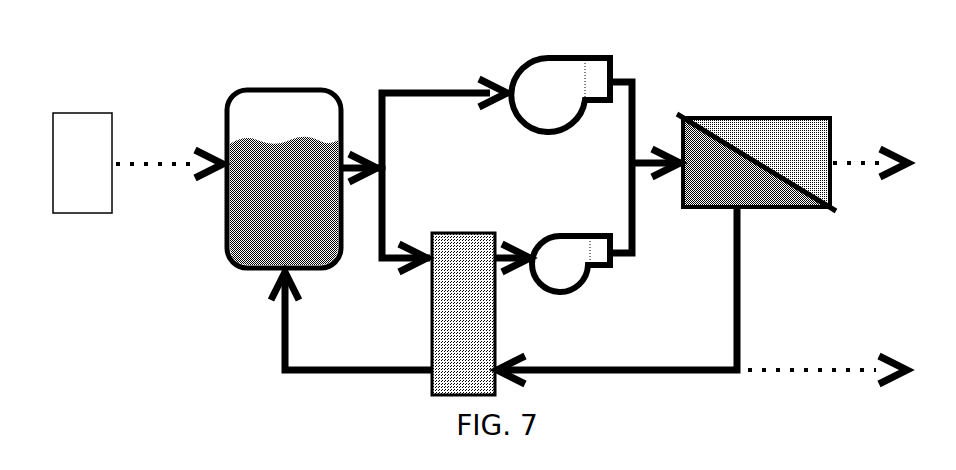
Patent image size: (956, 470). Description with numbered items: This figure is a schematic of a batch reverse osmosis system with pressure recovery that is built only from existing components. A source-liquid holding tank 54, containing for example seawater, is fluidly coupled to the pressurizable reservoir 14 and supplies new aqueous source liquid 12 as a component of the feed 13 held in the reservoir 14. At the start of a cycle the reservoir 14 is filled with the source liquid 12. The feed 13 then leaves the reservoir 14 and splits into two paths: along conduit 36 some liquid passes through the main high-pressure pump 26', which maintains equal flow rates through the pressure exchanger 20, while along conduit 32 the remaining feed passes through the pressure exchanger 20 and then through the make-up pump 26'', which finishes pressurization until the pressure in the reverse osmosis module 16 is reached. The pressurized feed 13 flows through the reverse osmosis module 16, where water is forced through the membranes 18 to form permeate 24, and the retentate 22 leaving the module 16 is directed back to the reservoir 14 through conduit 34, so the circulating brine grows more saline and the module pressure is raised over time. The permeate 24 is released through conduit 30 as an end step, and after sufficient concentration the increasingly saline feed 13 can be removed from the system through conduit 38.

The source-liquid holding tank 54 is at (69, 176).
The aqueous source liquid 12 is at (185, 164).
The reservoir 14 is at (268, 90).
The feed 13 is at (265, 215).
The conduit 36 is at (386, 122).
The conduit 32 is at (386, 212).
The pressure exchanger 20 is at (451, 327).
The main high-pressure pump 26' is at (559, 72).
The make-up pump 26'' is at (564, 239).
The reverse osmosis module 16 is at (737, 134).
The membranes 18 is at (727, 128).
The retentate 22 is at (700, 190).
The permeate 24 is at (781, 154).
The conduit 30 is at (846, 163).
The conduit 34 is at (741, 290).
The conduit 38 is at (805, 370).